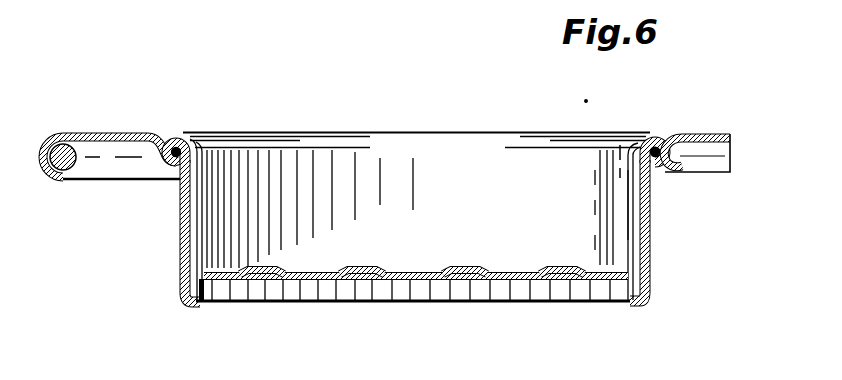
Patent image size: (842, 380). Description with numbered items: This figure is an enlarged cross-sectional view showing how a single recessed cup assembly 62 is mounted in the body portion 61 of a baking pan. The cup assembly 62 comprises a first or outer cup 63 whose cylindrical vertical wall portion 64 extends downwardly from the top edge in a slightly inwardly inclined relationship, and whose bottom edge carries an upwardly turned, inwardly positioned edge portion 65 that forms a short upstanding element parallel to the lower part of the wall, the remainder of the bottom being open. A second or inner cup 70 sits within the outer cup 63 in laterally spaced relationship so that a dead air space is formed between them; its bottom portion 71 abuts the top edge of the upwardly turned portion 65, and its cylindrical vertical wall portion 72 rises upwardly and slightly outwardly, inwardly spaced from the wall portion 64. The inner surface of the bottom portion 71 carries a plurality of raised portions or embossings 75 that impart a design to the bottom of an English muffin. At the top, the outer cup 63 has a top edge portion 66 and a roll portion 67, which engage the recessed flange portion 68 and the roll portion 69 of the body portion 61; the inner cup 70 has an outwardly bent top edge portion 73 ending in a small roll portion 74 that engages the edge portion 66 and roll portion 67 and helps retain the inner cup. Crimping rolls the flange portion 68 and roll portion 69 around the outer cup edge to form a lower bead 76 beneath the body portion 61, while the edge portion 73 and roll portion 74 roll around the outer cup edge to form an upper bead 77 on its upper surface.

The body portion 61 is at (85, 134).
The cup assembly 62 is at (505, 131).
The outer cup 63 is at (176, 224).
The cylindrical vertical wall portion 64 is at (184, 260).
The upwardly turned edge portion 65 is at (209, 301).
The top edge portion 66 is at (655, 145).
The roll portion 67 is at (692, 158).
The recessed flange portion 68 is at (150, 136).
The roll portion 69 is at (672, 146).
The inner cup 70 is at (620, 145).
The bottom portion 71 is at (505, 282).
The cylindrical vertical wall portion 72 is at (630, 239).
The top edge portion 73 is at (660, 165).
The roll portion 74 is at (644, 168).
The raised portions or embossings 75 is at (262, 266).
The lower bead 76 is at (178, 140).
The upper bead 77 is at (165, 165).